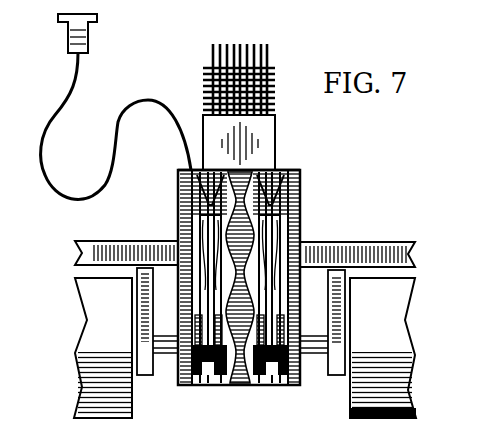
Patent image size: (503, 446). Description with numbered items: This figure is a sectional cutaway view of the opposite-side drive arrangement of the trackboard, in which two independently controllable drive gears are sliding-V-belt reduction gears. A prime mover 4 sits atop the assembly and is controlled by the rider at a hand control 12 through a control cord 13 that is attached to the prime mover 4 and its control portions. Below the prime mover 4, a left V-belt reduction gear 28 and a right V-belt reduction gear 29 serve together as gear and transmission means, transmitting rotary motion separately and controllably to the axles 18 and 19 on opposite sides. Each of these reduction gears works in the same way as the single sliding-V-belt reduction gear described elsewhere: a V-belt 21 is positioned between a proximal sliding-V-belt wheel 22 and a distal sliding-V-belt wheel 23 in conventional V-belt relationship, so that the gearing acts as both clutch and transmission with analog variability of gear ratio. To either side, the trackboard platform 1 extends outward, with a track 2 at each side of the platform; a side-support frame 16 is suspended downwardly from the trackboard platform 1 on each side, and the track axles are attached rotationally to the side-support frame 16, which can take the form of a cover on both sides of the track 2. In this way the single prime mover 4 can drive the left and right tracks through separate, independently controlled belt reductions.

The trackboard platform 1 is at (85, 254).
The track 2 is at (100, 300).
The prime mover 4 is at (242, 70).
The hand control 12 is at (97, 20).
The control cord 13 is at (152, 100).
The side-support frame 16 is at (140, 330).
The axle 18 is at (166, 358).
The axle 19 is at (316, 358).
The V-belt 21 is at (188, 222).
The proximal sliding-V-belt wheel 22 is at (184, 191).
The distal sliding-V-belt wheel 23 is at (244, 386).
The left V-belt reduction gear 28 is at (182, 171).
The right V-belt reduction gear 29 is at (299, 171).